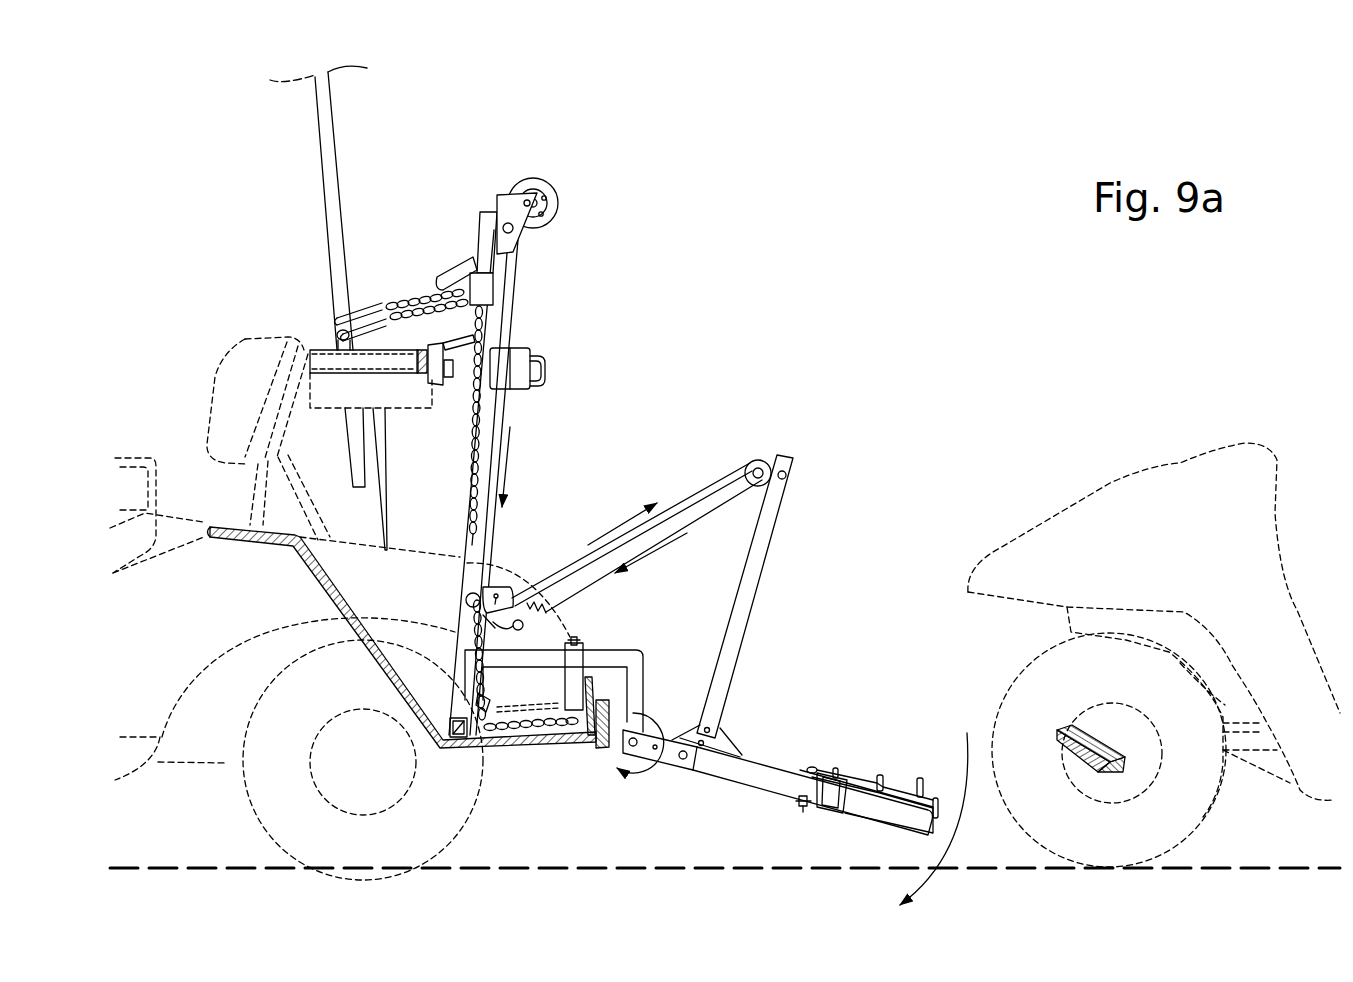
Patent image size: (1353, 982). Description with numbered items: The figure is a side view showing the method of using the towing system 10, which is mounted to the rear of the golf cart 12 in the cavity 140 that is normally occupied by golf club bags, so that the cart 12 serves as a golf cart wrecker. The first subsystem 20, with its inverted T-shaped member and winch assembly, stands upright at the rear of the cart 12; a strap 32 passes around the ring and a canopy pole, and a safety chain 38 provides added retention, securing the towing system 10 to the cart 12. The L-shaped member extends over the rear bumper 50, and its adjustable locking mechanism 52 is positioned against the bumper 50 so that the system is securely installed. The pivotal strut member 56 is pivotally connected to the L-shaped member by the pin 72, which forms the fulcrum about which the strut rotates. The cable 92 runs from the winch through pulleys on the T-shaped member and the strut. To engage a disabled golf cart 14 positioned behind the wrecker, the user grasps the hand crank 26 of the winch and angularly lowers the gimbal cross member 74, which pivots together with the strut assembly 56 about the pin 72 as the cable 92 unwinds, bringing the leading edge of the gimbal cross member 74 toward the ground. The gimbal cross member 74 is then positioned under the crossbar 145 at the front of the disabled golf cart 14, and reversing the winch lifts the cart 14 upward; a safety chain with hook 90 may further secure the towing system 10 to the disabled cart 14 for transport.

The towing system 10 is at (592, 374).
The golf cart 12 is at (513, 572).
The disabled golf cart 14 is at (1112, 484).
The first subsystem 20 is at (562, 180).
The hand crank 26 is at (460, 262).
The strap 32 is at (383, 380).
The safety chain 38 is at (407, 291).
The bumper 50 is at (598, 748).
The locking mechanism 52 is at (578, 660).
The pivotal strut member 56 is at (772, 550).
The pin 72 is at (633, 750).
The gimbal cross member 74 is at (858, 767).
The hook 90 is at (800, 810).
The cable 92 is at (525, 300).
The cavity 140 is at (433, 605).
The crossbar 145 is at (1110, 773).